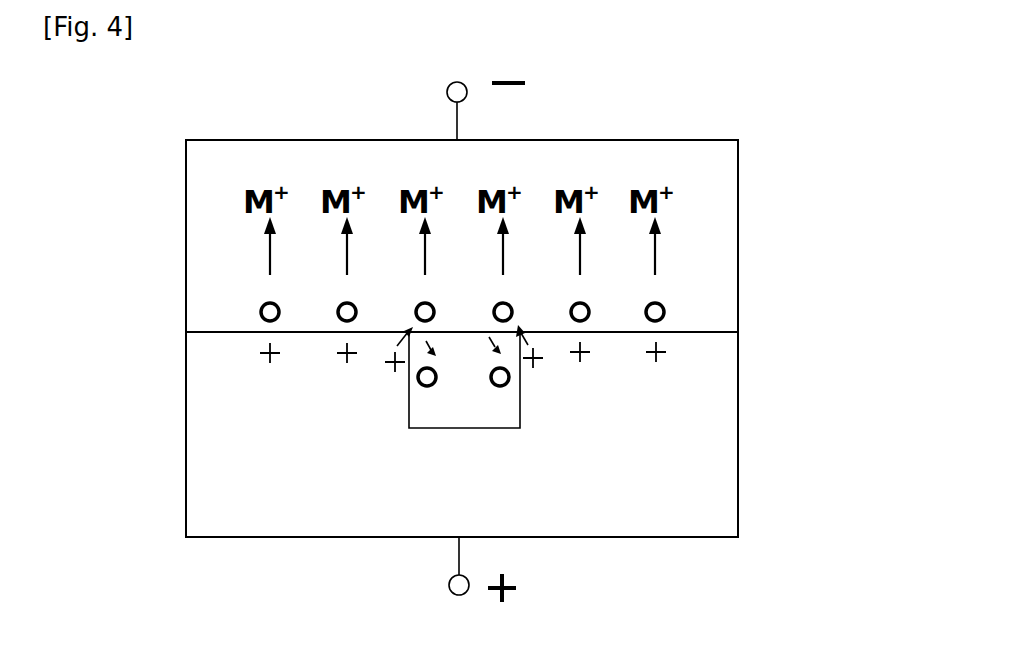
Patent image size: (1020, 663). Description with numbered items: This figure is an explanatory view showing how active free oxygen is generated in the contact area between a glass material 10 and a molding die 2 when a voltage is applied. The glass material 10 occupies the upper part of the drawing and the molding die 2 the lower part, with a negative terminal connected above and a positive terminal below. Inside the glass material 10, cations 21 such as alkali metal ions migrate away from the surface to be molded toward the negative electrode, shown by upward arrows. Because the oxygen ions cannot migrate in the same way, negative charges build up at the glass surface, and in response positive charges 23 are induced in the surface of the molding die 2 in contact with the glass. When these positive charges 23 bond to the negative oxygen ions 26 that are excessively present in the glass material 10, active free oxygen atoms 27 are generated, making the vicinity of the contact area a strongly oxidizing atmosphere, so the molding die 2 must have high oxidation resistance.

The molding die 2 is at (225, 393).
The glass material 10 is at (225, 248).
The cations 21 is at (593, 167).
The positive charges 23 is at (680, 349).
The negative oxygen ions 26 is at (687, 307).
The active free oxygen atoms 27 is at (505, 385).